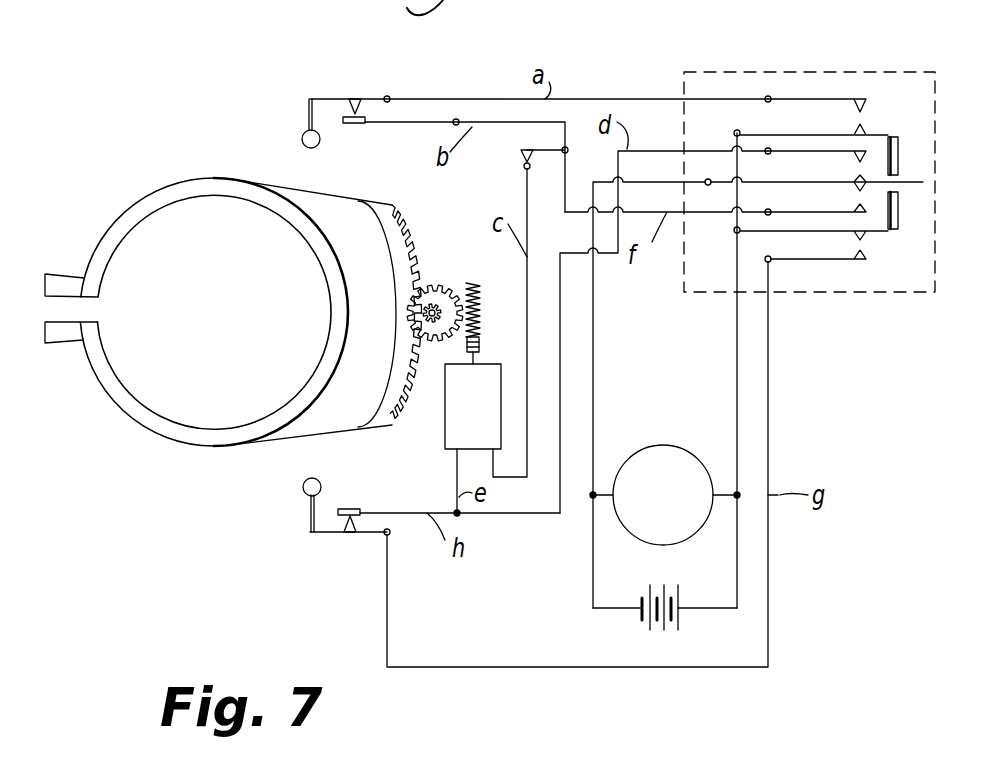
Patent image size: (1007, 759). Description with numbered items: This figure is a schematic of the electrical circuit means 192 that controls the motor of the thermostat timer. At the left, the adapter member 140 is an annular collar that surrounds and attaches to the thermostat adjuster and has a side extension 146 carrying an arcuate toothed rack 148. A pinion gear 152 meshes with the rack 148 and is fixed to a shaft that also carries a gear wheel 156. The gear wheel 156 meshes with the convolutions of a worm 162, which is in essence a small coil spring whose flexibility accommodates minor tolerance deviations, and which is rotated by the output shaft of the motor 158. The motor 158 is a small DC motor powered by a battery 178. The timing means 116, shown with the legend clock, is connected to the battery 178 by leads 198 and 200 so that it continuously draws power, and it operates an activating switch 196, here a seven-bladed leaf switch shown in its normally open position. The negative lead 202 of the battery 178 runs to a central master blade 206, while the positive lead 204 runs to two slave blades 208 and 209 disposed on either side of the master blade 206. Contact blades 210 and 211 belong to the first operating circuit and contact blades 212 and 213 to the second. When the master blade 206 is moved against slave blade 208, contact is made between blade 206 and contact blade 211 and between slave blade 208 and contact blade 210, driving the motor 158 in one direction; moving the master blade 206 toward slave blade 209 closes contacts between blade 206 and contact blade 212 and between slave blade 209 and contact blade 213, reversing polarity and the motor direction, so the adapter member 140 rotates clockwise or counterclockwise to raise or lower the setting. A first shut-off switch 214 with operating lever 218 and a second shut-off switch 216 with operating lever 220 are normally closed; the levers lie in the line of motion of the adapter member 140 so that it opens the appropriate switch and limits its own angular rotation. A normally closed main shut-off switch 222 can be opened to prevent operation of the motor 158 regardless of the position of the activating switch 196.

The adapter member 140 is at (180, 190).
The side extension 146 is at (338, 201).
The toothed rack 148 is at (397, 236).
The pinion gear 152 is at (420, 322).
The gear wheel 156 is at (447, 282).
The motor 158 is at (462, 422).
The worm 162 is at (480, 305).
The battery 178 is at (647, 624).
The timing means 116 is at (662, 446).
The electrical circuit means 192 is at (782, 420).
The activating switch 196 is at (747, 70).
The lead 198 is at (602, 490).
The lead 200 is at (722, 490).
The negative lead 202 is at (594, 386).
The positive lead 204 is at (737, 318).
The central blade 206 is at (908, 180).
The slave blade 208 is at (877, 130).
The slave blade 209 is at (878, 234).
The contact blade 210 is at (810, 100).
The contact blade 211 is at (830, 154).
The contact blade 212 is at (838, 211).
The contact blade 213 is at (834, 263).
The first shut-off switch 214 is at (358, 95).
The second shut-off switch 216 is at (346, 540).
The operating lever 218 is at (308, 113).
The operating lever 220 is at (310, 503).
The main shut-off switch 222 is at (521, 162).